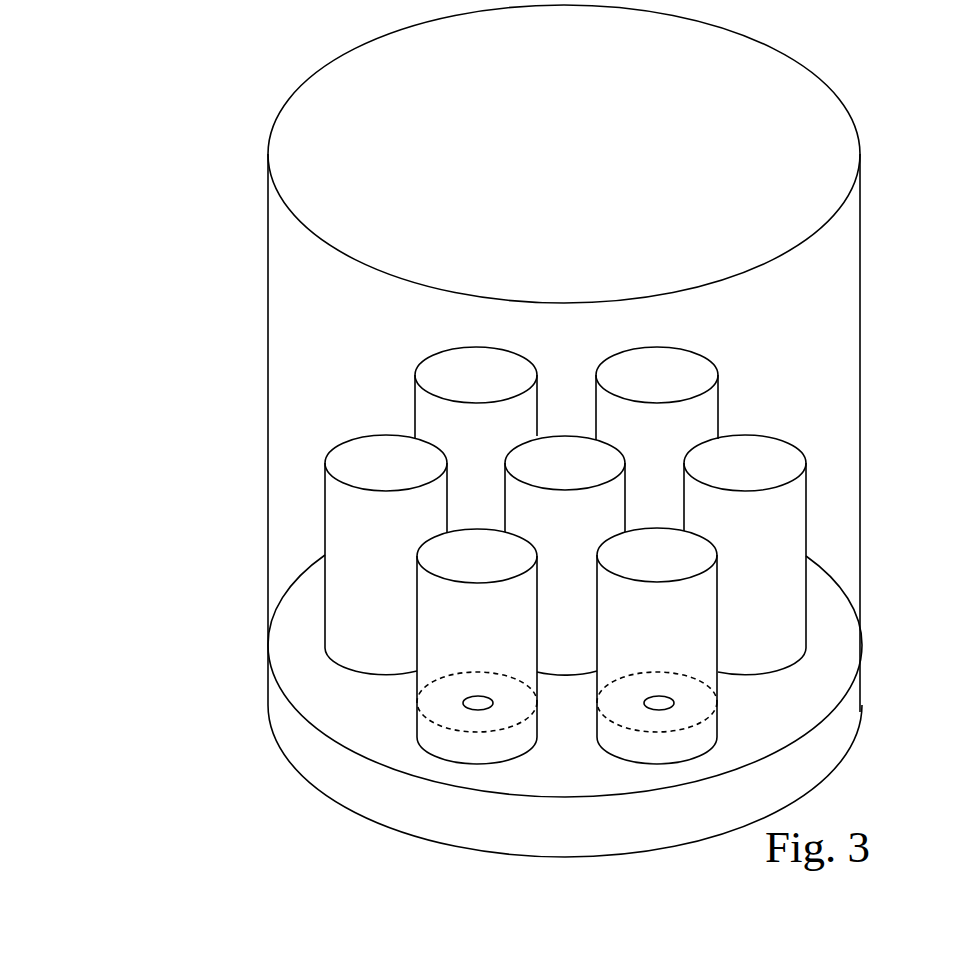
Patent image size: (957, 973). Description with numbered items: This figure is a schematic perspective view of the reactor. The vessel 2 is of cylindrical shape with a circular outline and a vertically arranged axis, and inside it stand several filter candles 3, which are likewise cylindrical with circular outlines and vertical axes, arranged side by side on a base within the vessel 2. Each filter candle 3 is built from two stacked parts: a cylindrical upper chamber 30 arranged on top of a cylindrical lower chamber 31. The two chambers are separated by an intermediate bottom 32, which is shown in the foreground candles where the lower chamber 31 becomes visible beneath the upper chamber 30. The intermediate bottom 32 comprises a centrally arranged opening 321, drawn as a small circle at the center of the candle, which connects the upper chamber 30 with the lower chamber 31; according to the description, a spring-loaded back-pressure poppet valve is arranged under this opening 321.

The vessel 2 is at (217, 218).
The filter candle 3 is at (429, 540).
The upper chamber 30 is at (298, 579).
The lower chamber 31 is at (477, 752).
The intermediate bottom 32 is at (447, 705).
The opening 321 is at (660, 705).